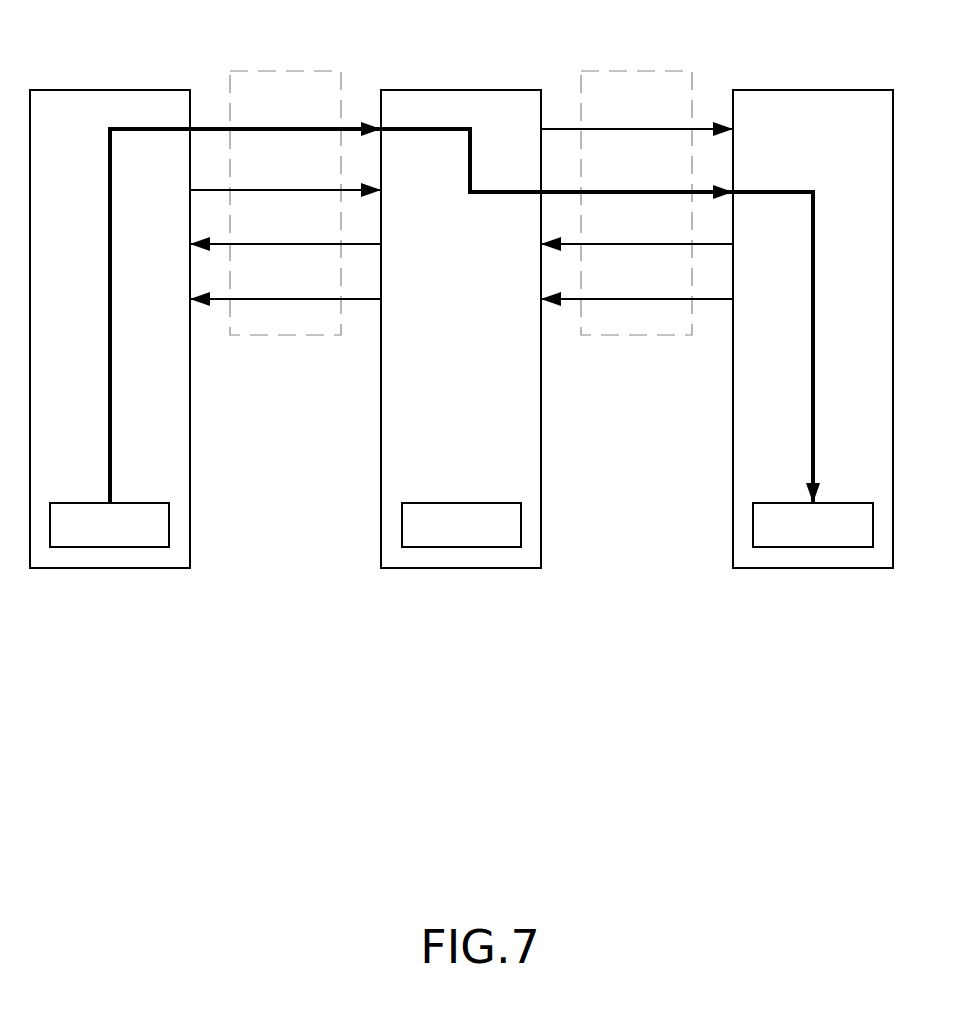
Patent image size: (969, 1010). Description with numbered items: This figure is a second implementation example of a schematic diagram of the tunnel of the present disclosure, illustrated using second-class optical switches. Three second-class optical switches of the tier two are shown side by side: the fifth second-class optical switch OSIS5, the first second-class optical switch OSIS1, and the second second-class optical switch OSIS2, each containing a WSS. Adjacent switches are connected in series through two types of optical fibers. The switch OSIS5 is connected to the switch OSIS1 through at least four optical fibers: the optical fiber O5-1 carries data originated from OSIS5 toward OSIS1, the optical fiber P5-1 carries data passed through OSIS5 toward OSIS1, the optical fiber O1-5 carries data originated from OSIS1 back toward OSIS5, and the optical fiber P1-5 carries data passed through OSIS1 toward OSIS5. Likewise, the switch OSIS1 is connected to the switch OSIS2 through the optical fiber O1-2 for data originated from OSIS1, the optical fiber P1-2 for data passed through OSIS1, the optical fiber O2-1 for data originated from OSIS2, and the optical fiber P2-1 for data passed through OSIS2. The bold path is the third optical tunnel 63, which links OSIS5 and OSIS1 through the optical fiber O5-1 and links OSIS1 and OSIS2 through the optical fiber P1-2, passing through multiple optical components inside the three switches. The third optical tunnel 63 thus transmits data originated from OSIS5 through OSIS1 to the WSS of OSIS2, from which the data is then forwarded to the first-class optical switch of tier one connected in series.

The third optical tunnel 63 is at (461, 256).
The fifth second-class optical switch OSIS5 is at (110, 347).
The first second-class optical switch OSIS1 is at (461, 347).
The second second-class optical switch OSIS2 is at (813, 347).
The wavelength selective switch WSS is at (461, 525).
The optical fiber O5-1 is at (245, 302).
The optical fiber P5-1 is at (285, 175).
The optical fiber O1-5 is at (285, 229).
The optical fiber P1-5 is at (285, 284).
The optical fiber O1-2 is at (637, 115).
The optical fiber P1-2 is at (557, 160).
The optical fiber O2-1 is at (637, 229).
The optical fiber P2-1 is at (637, 284).